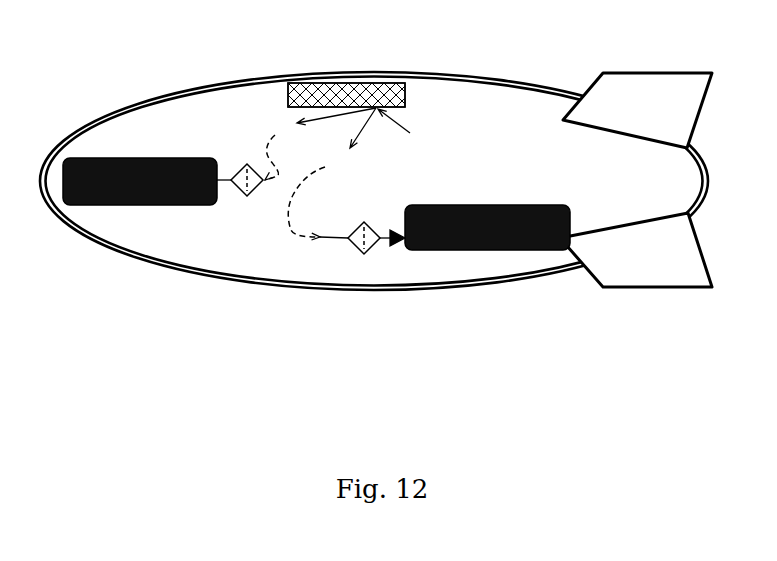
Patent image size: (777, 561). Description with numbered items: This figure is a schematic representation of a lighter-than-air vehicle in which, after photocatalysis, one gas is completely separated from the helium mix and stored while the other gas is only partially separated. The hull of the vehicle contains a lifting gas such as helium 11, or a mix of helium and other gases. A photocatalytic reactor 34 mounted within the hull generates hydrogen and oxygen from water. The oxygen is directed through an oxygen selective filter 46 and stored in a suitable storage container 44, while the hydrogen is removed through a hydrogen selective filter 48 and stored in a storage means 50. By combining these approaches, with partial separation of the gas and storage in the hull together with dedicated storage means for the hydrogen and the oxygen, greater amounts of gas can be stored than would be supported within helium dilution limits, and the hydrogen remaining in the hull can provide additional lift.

The helium 11 is at (242, 248).
The photocatalytic reactor 34 is at (382, 88).
The storage container 44 is at (153, 206).
The oxygen selective filter 46 is at (244, 163).
The hydrogen selective filter 48 is at (364, 254).
The storage means 50 is at (504, 252).